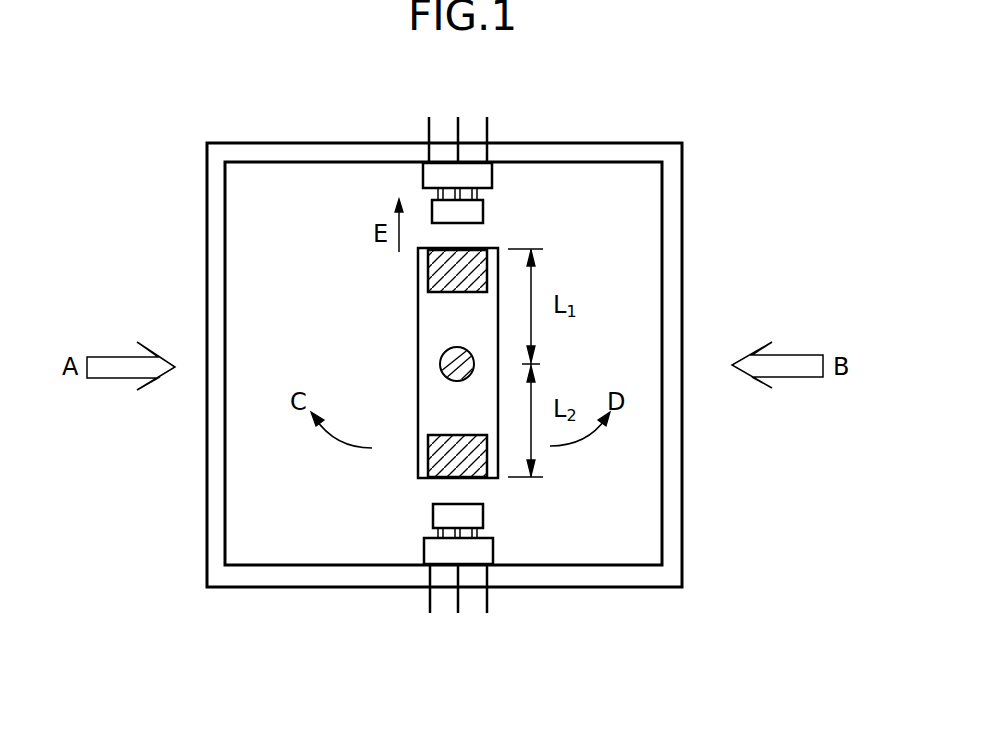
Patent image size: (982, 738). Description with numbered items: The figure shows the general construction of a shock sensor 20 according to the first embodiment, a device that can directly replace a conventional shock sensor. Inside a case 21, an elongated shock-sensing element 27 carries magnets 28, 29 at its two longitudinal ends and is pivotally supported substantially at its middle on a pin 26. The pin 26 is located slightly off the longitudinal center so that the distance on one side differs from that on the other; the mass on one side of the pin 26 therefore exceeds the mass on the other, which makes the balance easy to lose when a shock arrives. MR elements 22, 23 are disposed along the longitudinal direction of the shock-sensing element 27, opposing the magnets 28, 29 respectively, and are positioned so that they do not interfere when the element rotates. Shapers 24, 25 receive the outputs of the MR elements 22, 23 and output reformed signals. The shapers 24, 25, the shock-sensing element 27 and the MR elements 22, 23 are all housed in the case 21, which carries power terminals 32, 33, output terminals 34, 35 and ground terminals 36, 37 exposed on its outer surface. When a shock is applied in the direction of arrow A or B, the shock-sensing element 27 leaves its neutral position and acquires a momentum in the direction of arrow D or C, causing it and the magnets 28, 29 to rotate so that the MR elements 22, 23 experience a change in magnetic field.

The shock sensor 20 is at (478, 329).
The case 21 is at (678, 192).
The MR element 22 is at (483, 512).
The MR element 23 is at (483, 220).
The shaper 24 is at (493, 550).
The shaper 25 is at (492, 182).
The pin 26 is at (443, 362).
The shock-sensing element 27 is at (427, 308).
The magnet 28 is at (427, 467).
The magnet 29 is at (428, 267).
The power terminal 32 is at (430, 600).
The power terminal 33 is at (487, 125).
The output terminal 34 is at (458, 600).
The output terminal 35 is at (458, 122).
The ground terminal 36 is at (487, 600).
The ground terminal 37 is at (429, 128).